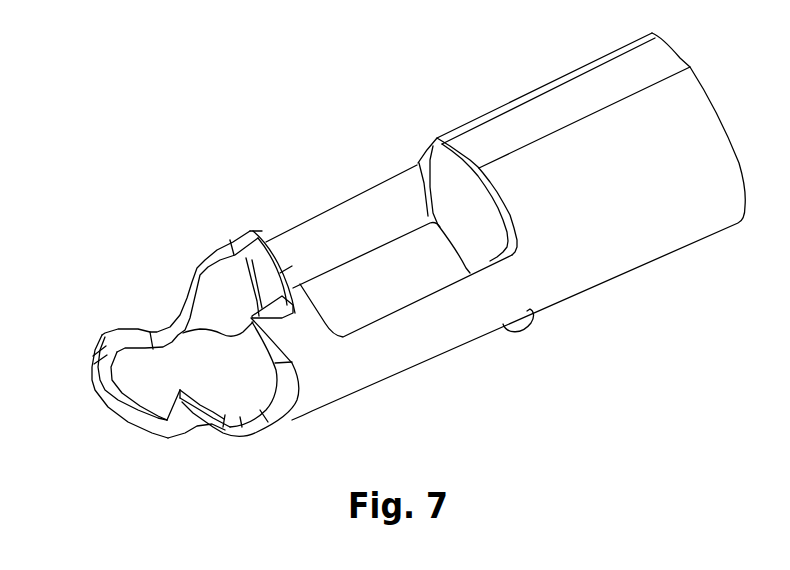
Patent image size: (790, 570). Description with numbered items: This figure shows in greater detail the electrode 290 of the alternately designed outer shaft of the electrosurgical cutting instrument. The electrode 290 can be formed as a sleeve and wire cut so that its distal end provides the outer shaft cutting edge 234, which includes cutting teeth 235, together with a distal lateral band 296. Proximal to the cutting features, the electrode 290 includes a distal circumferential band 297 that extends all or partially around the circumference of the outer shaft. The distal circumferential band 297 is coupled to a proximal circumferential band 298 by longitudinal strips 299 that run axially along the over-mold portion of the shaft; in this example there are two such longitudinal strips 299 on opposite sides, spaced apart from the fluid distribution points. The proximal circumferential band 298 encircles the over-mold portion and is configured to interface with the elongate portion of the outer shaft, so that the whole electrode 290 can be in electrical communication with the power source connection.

The electrode 290 is at (384, 283).
The distal lateral band 296 is at (161, 334).
The outer shaft cutting edge 234 is at (98, 329).
The cutting teeth 235 is at (175, 378).
The distal circumferential band 297 is at (260, 238).
The proximal circumferential band 298 is at (617, 262).
The longitudinal strips 299 is at (372, 230).